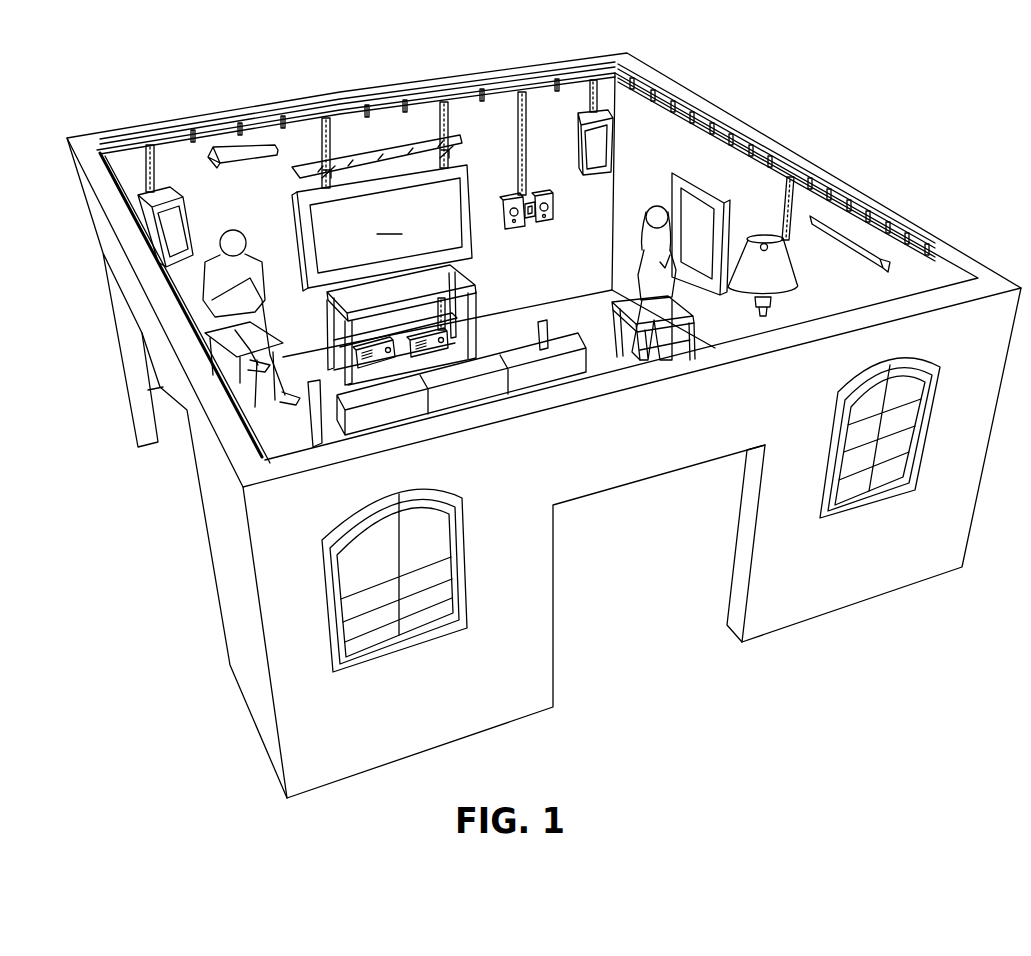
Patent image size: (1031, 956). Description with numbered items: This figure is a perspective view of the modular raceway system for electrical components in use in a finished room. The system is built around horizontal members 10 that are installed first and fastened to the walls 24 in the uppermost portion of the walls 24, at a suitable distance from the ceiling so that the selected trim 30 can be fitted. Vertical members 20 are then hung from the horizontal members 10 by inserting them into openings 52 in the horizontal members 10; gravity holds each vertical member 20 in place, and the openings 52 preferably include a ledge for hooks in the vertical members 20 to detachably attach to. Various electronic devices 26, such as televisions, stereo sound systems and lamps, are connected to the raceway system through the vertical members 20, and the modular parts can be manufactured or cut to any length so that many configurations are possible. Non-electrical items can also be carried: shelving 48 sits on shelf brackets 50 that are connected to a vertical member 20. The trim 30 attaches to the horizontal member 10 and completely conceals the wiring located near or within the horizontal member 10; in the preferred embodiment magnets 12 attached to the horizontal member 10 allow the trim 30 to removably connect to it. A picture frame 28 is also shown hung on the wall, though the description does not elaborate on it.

The horizontal member 10 is at (488, 146).
The magnets 12 is at (266, 130).
The vertical member 20 is at (155, 173).
The walls 24 is at (387, 95).
The electronic devices 26 is at (170, 227).
The picture frame 28 is at (673, 205).
The trim 30 is at (246, 163).
The shelving 48 is at (466, 149).
The shelf brackets 50 is at (333, 174).
The openings 52 is at (193, 140).